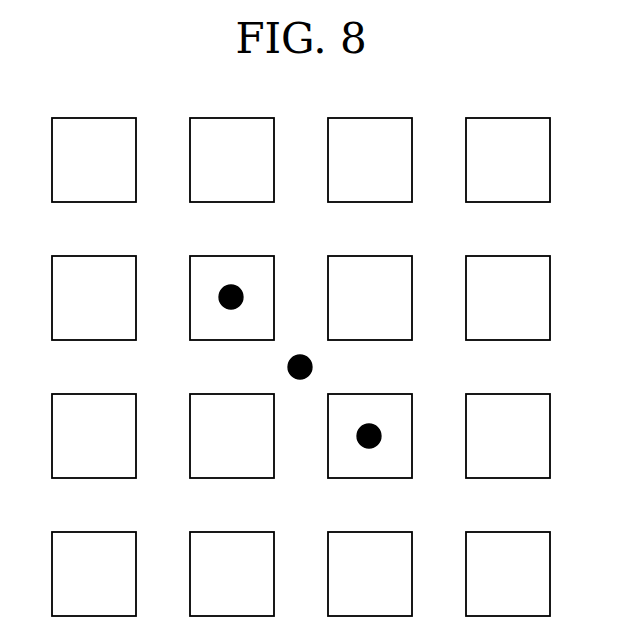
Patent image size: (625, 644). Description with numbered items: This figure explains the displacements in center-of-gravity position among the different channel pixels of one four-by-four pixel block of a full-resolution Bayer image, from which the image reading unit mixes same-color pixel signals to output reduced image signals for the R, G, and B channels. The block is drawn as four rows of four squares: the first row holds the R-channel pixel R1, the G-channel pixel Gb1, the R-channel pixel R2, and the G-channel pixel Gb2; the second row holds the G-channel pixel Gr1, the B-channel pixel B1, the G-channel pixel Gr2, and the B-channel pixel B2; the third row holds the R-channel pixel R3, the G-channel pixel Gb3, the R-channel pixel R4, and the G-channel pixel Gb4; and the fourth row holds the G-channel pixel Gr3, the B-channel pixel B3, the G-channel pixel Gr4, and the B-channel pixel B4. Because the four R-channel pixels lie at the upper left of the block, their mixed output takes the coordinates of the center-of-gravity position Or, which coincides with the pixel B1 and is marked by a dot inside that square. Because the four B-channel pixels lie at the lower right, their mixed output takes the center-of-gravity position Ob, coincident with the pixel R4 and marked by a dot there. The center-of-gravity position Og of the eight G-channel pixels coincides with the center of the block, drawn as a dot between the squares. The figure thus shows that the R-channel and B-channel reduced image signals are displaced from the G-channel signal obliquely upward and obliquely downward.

The R-channel pixel R1 is at (94, 142).
The G-channel pixel Gb1 is at (232, 142).
The R-channel pixel R2 is at (370, 142).
The G-channel pixel Gb2 is at (508, 142).
The G-channel pixel Gr1 is at (94, 280).
The B-channel pixel B1 is at (232, 280).
The G-channel pixel Gr2 is at (370, 280).
The B-channel pixel B2 is at (508, 280).
The R-channel pixel R3 is at (94, 418).
The G-channel pixel Gb3 is at (232, 418).
The R-channel pixel R4 is at (370, 418).
The G-channel pixel Gb4 is at (508, 418).
The G-channel pixel Gr3 is at (94, 556).
The B-channel pixel B3 is at (232, 556).
The G-channel pixel Gr4 is at (370, 556).
The B-channel pixel B4 is at (508, 556).
The center-of-gravity position Or is at (238, 309).
The center-of-gravity position Og is at (297, 381).
The center-of-gravity position Ob is at (378, 449).